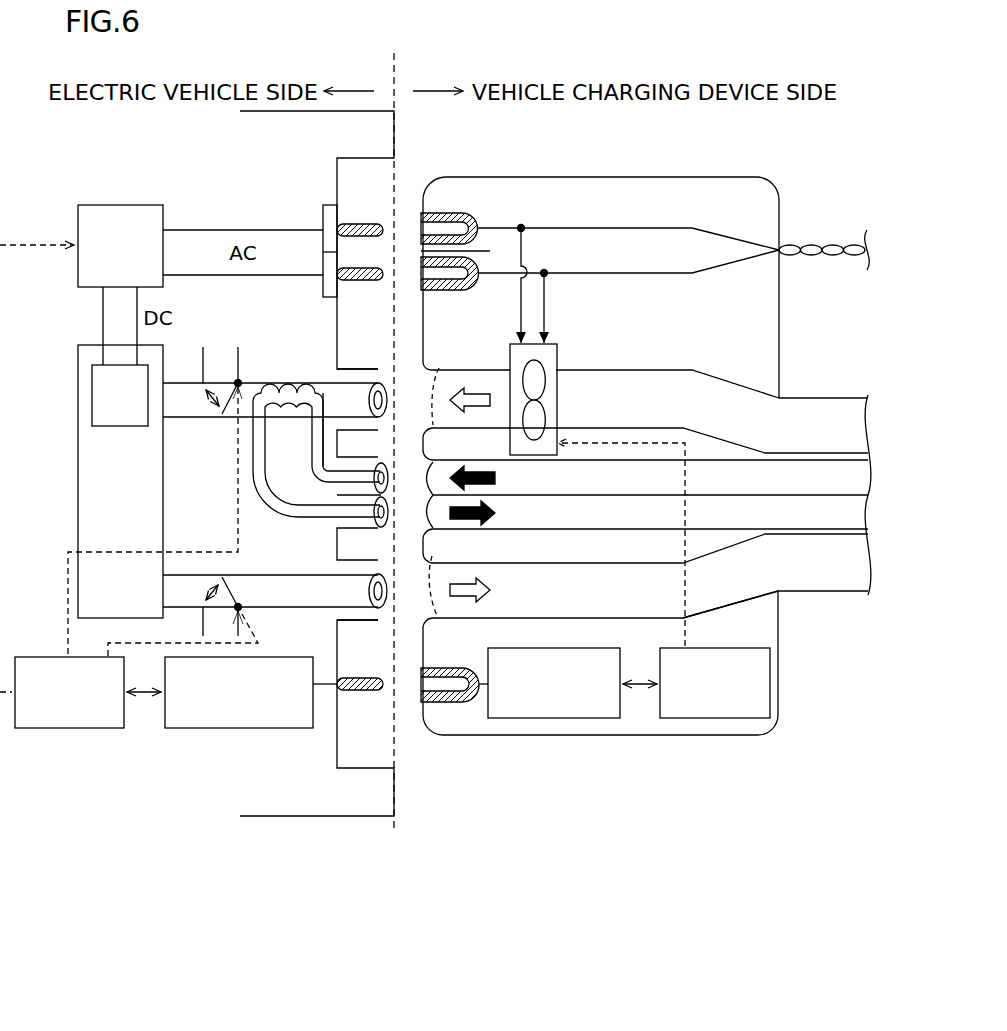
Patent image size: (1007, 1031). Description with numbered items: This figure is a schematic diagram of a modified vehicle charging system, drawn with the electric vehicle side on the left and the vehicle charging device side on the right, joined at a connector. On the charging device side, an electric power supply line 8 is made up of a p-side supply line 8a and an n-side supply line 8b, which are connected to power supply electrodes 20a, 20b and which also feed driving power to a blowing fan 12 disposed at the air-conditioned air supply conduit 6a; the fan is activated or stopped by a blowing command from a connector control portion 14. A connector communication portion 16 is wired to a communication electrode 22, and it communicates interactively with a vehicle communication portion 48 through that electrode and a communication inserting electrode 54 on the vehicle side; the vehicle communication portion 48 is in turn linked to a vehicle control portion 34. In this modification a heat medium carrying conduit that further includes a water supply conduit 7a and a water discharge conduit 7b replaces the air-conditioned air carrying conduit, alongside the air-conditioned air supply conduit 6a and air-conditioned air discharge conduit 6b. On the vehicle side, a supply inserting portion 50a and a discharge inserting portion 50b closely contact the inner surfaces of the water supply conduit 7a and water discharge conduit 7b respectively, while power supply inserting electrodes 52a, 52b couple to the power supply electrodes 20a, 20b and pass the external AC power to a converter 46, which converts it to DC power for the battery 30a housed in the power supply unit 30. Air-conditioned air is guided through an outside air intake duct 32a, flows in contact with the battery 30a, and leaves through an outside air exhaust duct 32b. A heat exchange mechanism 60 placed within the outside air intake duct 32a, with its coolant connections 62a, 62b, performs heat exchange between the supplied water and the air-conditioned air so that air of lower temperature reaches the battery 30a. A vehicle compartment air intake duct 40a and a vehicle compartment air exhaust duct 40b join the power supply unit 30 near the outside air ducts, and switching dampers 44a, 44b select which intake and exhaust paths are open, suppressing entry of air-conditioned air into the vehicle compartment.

The air-conditioned air supply conduit 6a is at (646, 385).
The air-conditioned air discharge conduit 6b is at (640, 601).
The water supply conduit 7a is at (802, 478).
The water discharge conduit 7b is at (836, 512).
The electric power supply line 8 is at (823, 231).
The p-side supply line 8a is at (618, 228).
The n-side supply line 8b is at (618, 273).
The blowing fan 12 is at (560, 357).
The connector control portion 14 is at (725, 648).
The connector communication portion 16 is at (562, 648).
The power supply electrode 20a is at (443, 214).
The power supply electrode 20b is at (443, 289).
The communication electrode 22 is at (454, 668).
The power supply unit 30 is at (78, 366).
The battery 30a is at (120, 427).
The outside air intake duct 32a is at (329, 394).
The outside air exhaust duct 32b is at (298, 585).
The vehicle control portion 34 is at (93, 732).
The vehicle compartment air intake duct 40a is at (218, 360).
The vehicle compartment air exhaust duct 40b is at (216, 622).
The switching damper 44a is at (241, 381).
The switching damper 44b is at (242, 610).
The converter 46 is at (98, 205).
The vehicle communication portion 48 is at (235, 732).
The supply inserting portion 50a is at (356, 361).
The discharge inserting portion 50b is at (356, 630).
The power supply inserting electrode 52a is at (360, 227).
The power supply inserting electrode 52b is at (357, 280).
The communication inserting electrode 54 is at (367, 691).
The heat exchange mechanism 60 is at (288, 392).
The coolant passage 62a is at (365, 477).
The coolant passage 62b is at (363, 516).